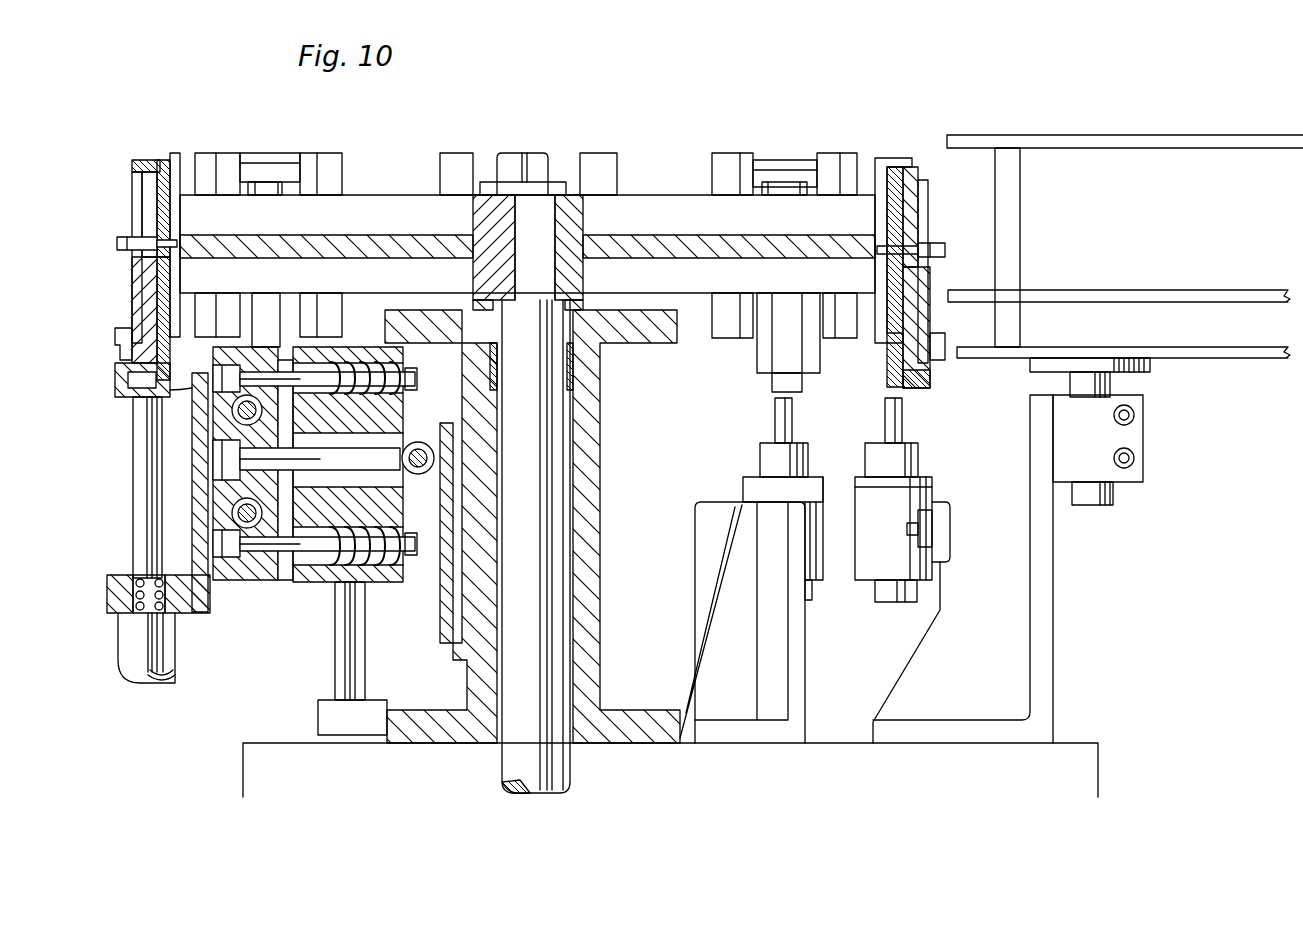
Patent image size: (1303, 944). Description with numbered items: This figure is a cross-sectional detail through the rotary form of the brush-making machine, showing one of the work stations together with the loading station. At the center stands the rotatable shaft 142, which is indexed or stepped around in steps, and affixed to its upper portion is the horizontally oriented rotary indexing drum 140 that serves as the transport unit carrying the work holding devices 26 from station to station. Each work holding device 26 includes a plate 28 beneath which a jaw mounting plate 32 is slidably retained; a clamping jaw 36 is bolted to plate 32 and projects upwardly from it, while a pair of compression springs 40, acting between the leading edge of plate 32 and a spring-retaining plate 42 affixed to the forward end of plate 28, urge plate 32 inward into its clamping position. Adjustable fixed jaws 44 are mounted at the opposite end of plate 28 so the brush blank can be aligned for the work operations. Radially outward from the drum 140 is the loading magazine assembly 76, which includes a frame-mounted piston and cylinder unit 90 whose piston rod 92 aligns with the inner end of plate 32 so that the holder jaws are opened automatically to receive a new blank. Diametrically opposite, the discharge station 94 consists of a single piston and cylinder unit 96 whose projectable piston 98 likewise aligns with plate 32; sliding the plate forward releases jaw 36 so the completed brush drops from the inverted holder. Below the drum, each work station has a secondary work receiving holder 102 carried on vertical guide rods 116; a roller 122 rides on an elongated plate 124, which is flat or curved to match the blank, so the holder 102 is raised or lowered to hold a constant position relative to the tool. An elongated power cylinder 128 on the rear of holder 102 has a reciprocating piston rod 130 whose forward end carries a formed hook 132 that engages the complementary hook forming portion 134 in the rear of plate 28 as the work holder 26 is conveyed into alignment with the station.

The work holding device 26 is at (917, 156).
The plate 28 is at (155, 170).
The plate 32 is at (150, 322).
The clamping jaw 36 is at (118, 243).
The compression springs 40 is at (170, 170).
The spring-retaining plate 42 is at (132, 163).
The fixed jaws 44 is at (125, 358).
The loading magazine assembly 76 is at (1106, 132).
The piston and cylinder unit 90 is at (930, 457).
The piston rod 92 is at (896, 420).
The discharge station 94 is at (710, 440).
The piston and cylinder unit 96 is at (816, 445).
The piston 98 is at (782, 410).
The secondary work receiving holder 102 is at (212, 622).
The vertical guide rods 116 is at (398, 370).
The roller 122 is at (419, 442).
The elongated plate 124 is at (440, 580).
The power cylinder 128 is at (130, 654).
The piston rod 130 is at (140, 460).
The formed hook 132 is at (120, 380).
The hook forming portion 134 is at (932, 378).
The rotary indexing drum 140 is at (650, 192).
The rotatable shaft 142 is at (548, 472).